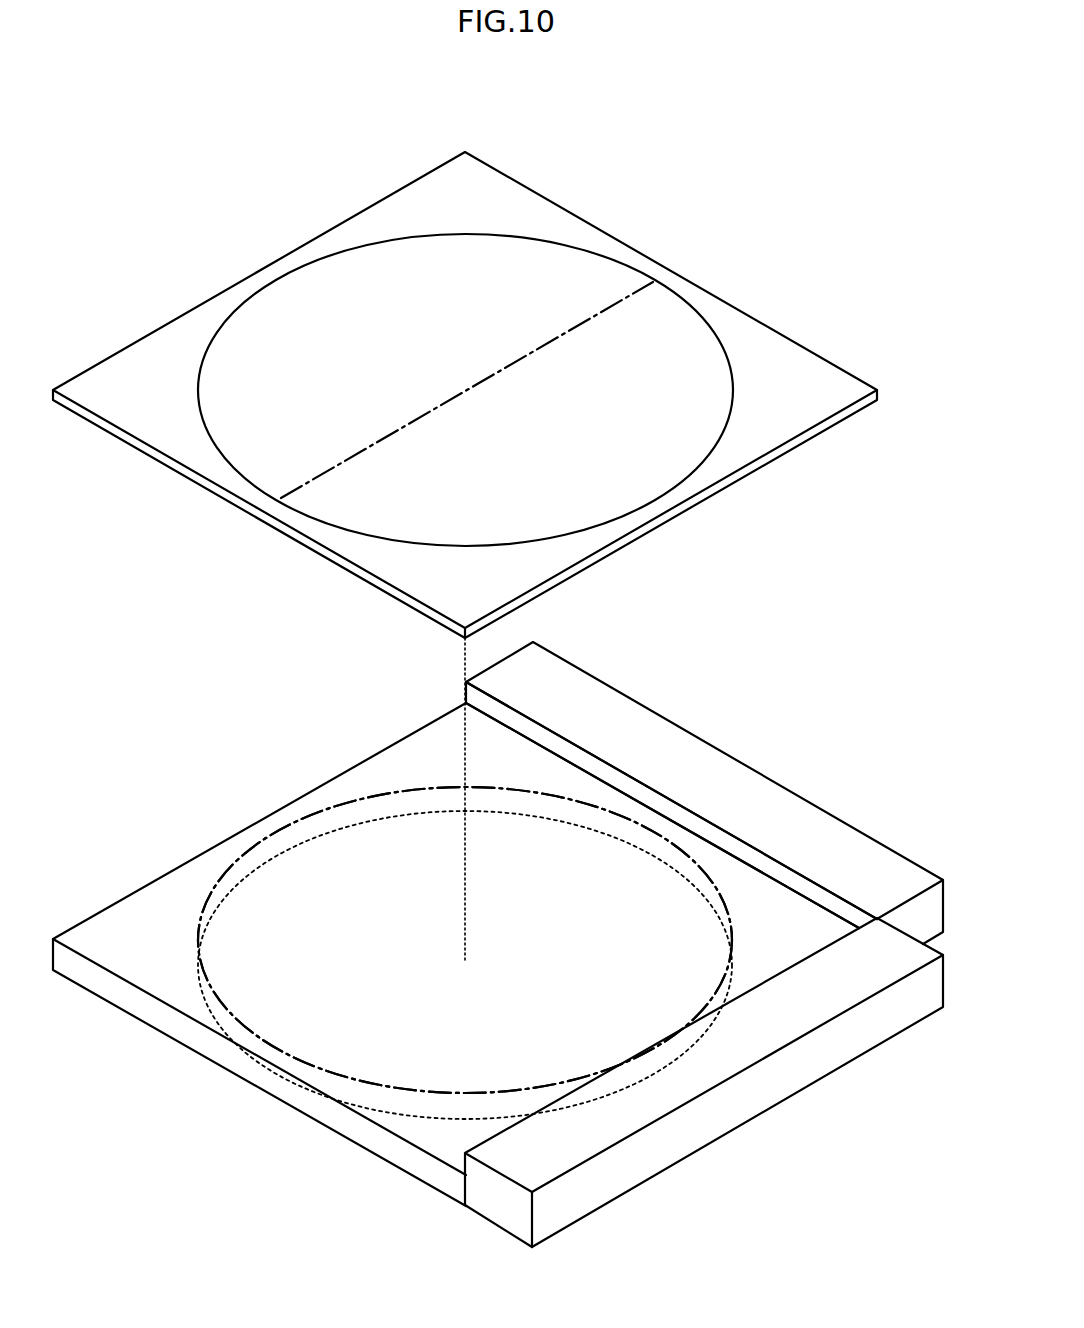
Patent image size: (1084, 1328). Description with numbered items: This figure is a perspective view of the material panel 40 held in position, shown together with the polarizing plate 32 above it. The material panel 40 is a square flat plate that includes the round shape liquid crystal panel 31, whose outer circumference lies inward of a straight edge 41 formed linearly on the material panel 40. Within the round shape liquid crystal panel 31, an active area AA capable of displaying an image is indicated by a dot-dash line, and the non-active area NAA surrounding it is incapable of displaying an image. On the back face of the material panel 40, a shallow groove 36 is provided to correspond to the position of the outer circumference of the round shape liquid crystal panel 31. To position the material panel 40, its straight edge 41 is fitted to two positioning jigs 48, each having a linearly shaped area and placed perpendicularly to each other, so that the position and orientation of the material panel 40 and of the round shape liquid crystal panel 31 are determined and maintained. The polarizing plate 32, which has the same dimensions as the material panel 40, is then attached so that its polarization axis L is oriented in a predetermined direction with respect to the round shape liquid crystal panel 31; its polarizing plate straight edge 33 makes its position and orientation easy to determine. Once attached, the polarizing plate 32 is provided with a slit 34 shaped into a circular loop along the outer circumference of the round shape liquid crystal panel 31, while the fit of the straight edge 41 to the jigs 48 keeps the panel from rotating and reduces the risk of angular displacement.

The round shape liquid crystal panel 31 is at (388, 1088).
The polarizing plate 32 is at (738, 282).
The polarizing plate straight edge 33 is at (826, 354).
The slit 34 is at (281, 276).
The polarization axis L is at (577, 323).
The groove 36 is at (248, 1060).
The material panel 40 is at (175, 871).
The straight edge 41 is at (803, 893).
The positioning jig 48 is at (766, 809).
The active area AA is at (613, 812).
The non-active area NAA is at (512, 767).